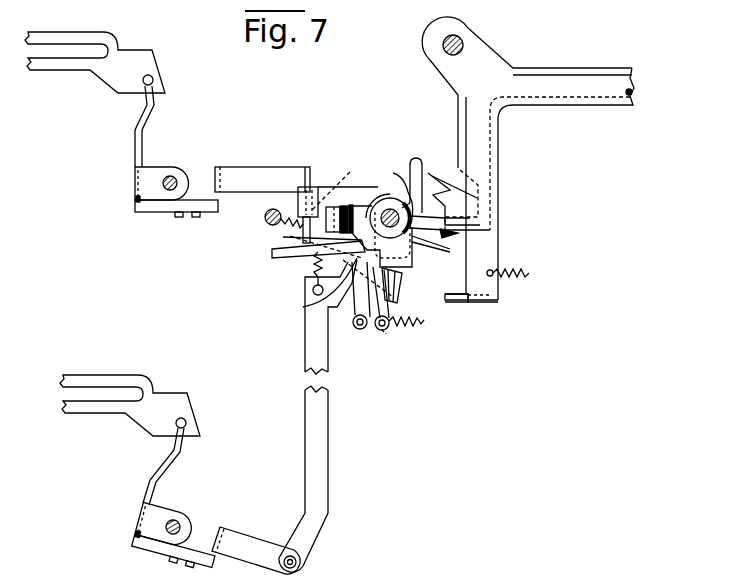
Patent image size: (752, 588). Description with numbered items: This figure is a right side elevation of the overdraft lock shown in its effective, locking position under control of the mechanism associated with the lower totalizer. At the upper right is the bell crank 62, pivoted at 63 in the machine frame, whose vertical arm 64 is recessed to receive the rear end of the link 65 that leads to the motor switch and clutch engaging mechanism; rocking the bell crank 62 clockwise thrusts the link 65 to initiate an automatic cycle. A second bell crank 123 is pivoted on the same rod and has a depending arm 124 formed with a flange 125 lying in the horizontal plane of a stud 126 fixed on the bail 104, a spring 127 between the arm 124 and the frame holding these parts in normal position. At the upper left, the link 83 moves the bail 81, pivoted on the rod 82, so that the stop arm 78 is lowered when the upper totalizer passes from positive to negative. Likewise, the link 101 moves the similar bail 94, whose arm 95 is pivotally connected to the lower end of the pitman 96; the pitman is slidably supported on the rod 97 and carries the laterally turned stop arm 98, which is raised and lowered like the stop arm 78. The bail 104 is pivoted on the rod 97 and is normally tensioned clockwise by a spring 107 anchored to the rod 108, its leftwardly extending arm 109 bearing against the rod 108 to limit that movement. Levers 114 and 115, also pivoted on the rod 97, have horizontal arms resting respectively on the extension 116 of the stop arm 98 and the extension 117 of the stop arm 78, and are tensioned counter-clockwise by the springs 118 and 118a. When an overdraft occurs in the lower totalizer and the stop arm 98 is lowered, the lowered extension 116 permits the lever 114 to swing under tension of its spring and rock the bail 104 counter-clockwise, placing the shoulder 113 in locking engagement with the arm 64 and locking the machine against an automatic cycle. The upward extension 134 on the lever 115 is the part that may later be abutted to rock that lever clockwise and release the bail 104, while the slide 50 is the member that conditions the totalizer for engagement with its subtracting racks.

The slide 50 is at (433, 241).
The bell crank 62 is at (530, 72).
The pivot 63 is at (443, 52).
The vertical arm 64 is at (493, 203).
The link 65 is at (448, 182).
The stop arm 78 is at (308, 152).
The bail 81 is at (142, 157).
The rod 82 is at (174, 176).
The link 83 is at (89, 36).
The bail 94 is at (166, 467).
The arm 95 is at (242, 540).
The pitman 96 is at (327, 402).
The rod 97 is at (375, 240).
The stop arm 98 is at (350, 178).
The link 101 is at (98, 382).
The bail 104 is at (414, 253).
The spring 107 is at (303, 307).
The rod 108 is at (265, 218).
The arm 109 is at (274, 258).
The shoulder 113 is at (442, 228).
The lever 114 is at (387, 310).
The lever 115 is at (343, 337).
The extension 116 is at (313, 270).
The extension 117 is at (283, 238).
The spring 118 is at (423, 325).
The spring 118a is at (402, 343).
The bell crank 123 is at (538, 90).
The depending arm 124 is at (492, 250).
The flange 125 is at (459, 302).
The stud 126 is at (403, 288).
The spring 127 is at (530, 275).
The upward extension 134 is at (414, 157).